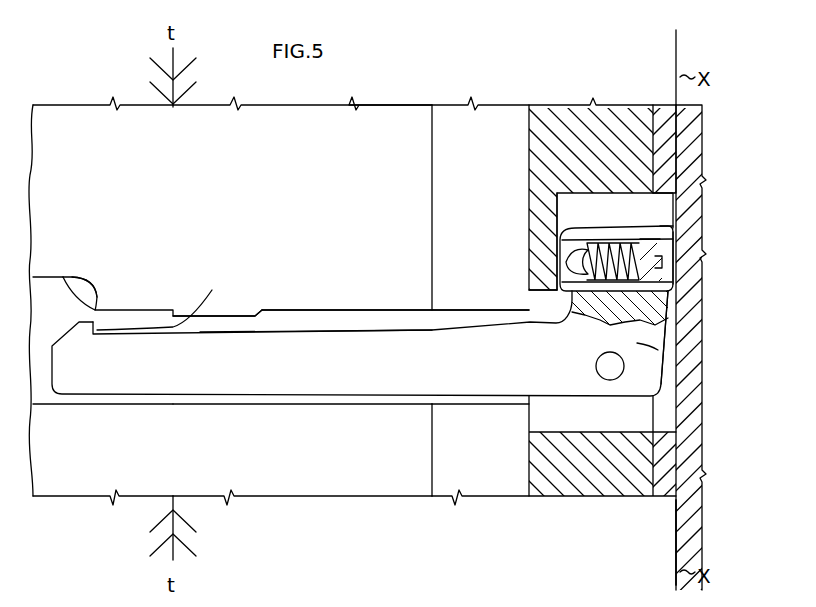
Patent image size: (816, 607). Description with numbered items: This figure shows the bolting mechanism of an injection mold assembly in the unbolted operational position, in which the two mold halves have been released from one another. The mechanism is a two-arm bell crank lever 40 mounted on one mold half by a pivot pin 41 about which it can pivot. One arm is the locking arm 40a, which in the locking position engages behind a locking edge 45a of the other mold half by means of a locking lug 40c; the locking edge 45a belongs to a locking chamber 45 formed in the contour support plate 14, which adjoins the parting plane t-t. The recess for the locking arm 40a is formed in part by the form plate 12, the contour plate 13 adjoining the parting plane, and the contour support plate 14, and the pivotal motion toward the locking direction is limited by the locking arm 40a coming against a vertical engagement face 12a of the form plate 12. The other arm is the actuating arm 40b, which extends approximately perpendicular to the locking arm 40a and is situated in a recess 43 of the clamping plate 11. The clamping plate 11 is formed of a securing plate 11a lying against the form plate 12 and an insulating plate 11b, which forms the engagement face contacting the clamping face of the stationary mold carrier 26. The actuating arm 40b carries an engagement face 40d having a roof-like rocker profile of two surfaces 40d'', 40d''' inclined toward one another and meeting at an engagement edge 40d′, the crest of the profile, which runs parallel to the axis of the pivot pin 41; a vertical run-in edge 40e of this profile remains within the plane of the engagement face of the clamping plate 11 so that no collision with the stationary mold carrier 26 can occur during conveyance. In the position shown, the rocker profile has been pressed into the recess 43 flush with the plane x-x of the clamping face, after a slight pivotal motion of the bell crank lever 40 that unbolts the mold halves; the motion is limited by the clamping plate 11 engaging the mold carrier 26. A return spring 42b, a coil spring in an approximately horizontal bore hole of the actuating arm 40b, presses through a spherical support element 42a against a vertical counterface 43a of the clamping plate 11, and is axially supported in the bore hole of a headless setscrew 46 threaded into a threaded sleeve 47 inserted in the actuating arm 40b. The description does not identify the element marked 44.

The clamping plate 11 is at (408, 303).
The securing plate 11a is at (573, 135).
The insulating plate 11b is at (665, 125).
The form plate 12 is at (438, 150).
The vertical engagement face 12a is at (232, 310).
The contour plate 13 is at (260, 160).
The contour support plate 14 is at (95, 148).
The stationary mold carrier 26 is at (676, 521).
The two-arm bell crank lever 40 is at (434, 303).
The locking arm 40a is at (357, 350).
The actuating arm 40b is at (668, 387).
The locking lug 40c is at (212, 290).
The engagement face 40d is at (408, 303).
The engagement edge 40d′ is at (676, 270).
The inclined surface of the rocker profile 40d'' is at (723, 242).
The inclined surface of the rocker profile 40d''' is at (699, 361).
The vertical run-in edge 40e is at (678, 213).
The pivot pin 41 is at (597, 364).
The spherical support element 42a is at (558, 269).
The return spring 42b is at (662, 328).
The recess 43 is at (680, 171).
The vertical counterface 43a is at (538, 204).
The guide surface 44 is at (412, 318).
The locking chamber 45 is at (293, 265).
The locking edge 45a is at (63, 277).
The headless setscrew 46 is at (648, 279).
The threaded sleeve 47 is at (558, 196).